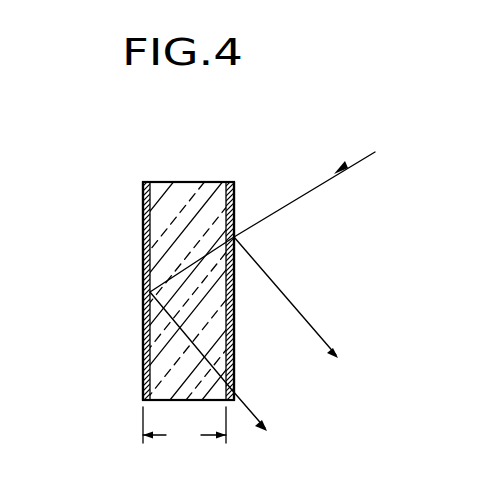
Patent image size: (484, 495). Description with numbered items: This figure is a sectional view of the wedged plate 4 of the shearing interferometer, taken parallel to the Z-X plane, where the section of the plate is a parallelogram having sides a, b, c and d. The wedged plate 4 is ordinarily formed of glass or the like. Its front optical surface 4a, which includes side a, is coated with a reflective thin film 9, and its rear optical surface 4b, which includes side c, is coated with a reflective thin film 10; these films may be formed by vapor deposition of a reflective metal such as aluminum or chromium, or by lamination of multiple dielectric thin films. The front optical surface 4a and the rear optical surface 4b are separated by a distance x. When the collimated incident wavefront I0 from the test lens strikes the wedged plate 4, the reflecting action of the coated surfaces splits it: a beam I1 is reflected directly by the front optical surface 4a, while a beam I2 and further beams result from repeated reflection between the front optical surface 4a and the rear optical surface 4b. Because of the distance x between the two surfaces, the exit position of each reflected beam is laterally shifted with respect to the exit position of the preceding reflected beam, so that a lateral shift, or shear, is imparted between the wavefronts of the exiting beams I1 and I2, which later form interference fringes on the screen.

The wedged plate 4 is at (209, 176).
The front optical surface 4a is at (234, 364).
The rear optical surface 4b is at (143, 360).
The reflective thin film 9 is at (234, 338).
The reflective thin film 10 is at (143, 327).
The side a is at (234, 307).
The side b is at (188, 181).
The side c is at (143, 253).
The side d is at (167, 403).
The distance x is at (184, 428).
The incident wavefront I0 is at (331, 177).
The reflected beam I1 is at (312, 325).
The reflected beam I2 is at (258, 410).